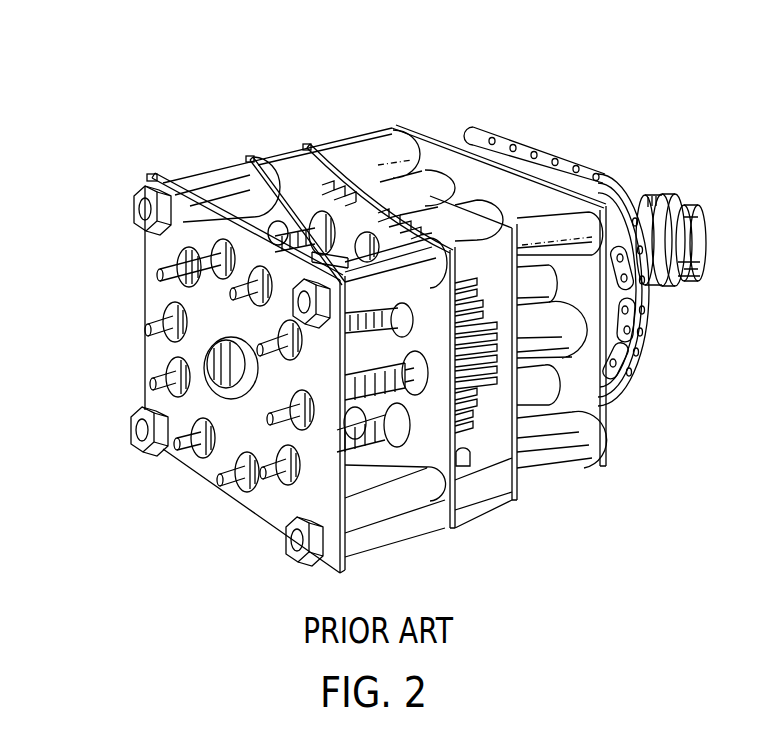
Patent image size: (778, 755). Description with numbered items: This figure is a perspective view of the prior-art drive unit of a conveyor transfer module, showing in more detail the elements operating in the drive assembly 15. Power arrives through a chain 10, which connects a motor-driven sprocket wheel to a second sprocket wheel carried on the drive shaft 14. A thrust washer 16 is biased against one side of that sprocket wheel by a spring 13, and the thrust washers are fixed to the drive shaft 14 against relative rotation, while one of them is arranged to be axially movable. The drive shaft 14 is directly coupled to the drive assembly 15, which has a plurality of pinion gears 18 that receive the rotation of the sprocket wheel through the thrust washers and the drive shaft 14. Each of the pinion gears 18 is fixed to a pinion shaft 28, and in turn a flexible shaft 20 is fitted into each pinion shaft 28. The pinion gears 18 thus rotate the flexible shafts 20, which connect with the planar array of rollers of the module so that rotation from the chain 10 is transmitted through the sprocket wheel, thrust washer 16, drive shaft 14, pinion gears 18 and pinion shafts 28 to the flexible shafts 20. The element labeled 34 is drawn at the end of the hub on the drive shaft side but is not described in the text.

The chain 10 is at (642, 366).
The spring 13 is at (658, 285).
The drive shaft 14 is at (210, 348).
The drive assembly 15 is at (333, 126).
The thrust washer 16 is at (701, 275).
The pinion gears 18 is at (472, 438).
The flexible shafts 20 is at (197, 452).
The pinion shaft 28 is at (374, 445).
The drive shaft nut 34 is at (700, 220).